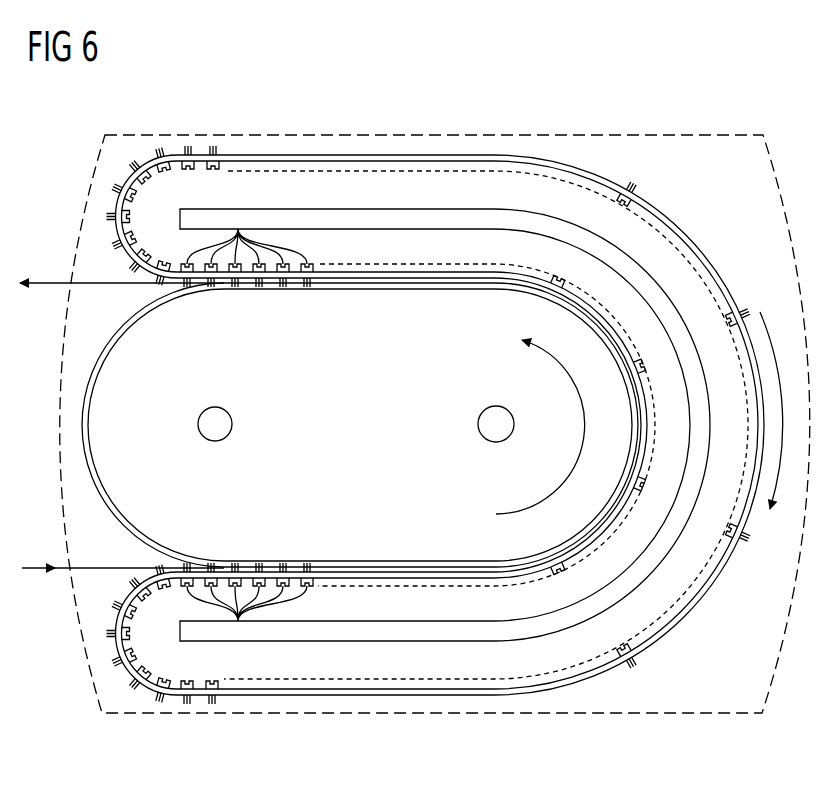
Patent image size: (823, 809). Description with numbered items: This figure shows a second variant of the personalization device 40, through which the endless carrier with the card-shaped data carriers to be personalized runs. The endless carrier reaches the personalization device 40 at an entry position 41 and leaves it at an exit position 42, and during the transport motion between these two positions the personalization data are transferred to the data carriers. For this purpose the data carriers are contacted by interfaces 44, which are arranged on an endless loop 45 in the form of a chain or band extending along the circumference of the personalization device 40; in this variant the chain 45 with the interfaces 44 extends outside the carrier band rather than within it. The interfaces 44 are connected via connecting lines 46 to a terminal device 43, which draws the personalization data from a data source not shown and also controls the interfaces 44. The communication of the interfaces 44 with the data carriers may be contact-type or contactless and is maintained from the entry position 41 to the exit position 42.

The personalization device 40 is at (626, 133).
The entry position 41 is at (212, 568).
The exit position 42 is at (207, 284).
The terminal device 43 is at (707, 393).
The interfaces 44 is at (165, 678).
The endless loop 45 is at (280, 694).
The connecting lines 46 is at (306, 590).